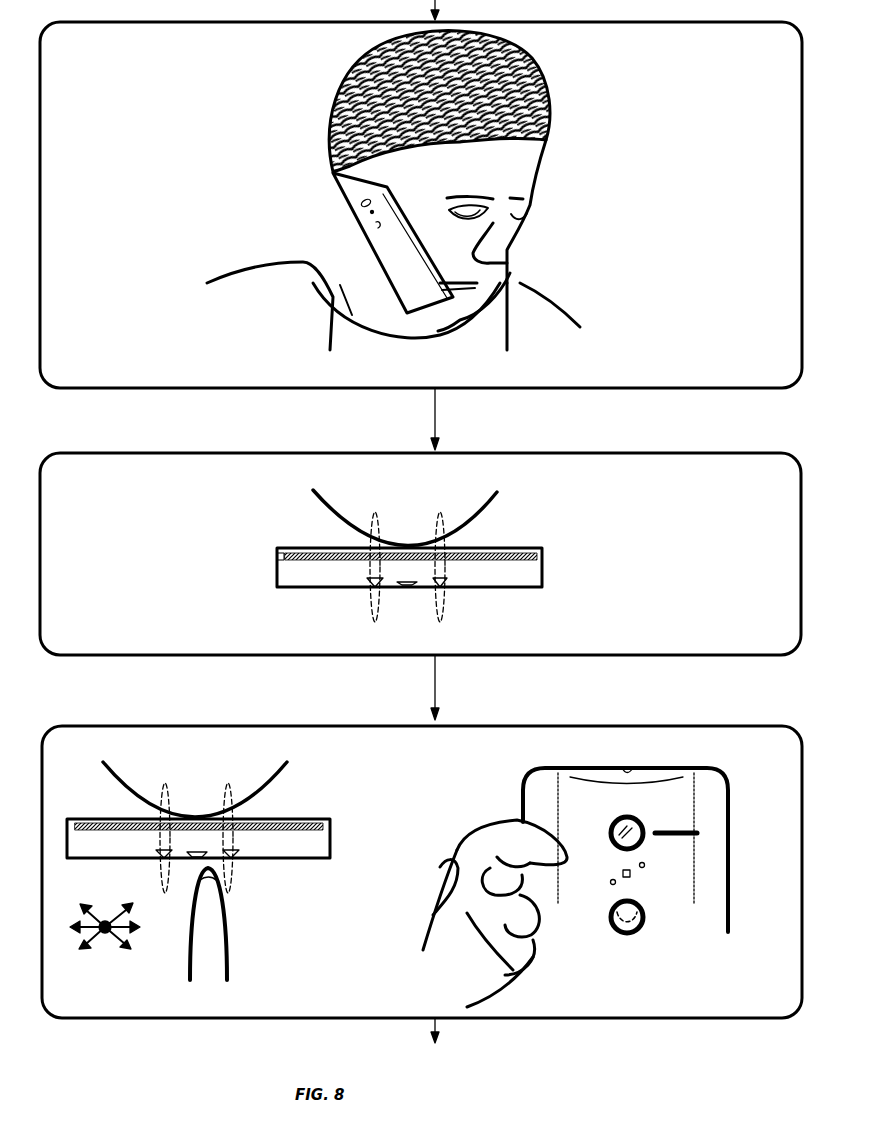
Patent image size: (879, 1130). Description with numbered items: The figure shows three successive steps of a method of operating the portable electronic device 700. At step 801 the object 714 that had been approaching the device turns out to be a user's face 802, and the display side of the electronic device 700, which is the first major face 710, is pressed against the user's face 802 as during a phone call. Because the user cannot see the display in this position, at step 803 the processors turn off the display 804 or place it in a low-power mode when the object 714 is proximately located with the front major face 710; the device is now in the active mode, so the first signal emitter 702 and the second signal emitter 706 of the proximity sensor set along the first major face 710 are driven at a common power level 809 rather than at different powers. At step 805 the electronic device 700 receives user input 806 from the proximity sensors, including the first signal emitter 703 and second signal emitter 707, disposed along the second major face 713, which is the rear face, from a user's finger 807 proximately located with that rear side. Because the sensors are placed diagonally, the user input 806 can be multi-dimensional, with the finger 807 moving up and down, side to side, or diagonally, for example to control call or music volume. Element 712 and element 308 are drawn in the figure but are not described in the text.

The electronic device 700 is at (325, 209).
The step 801 is at (800, 157).
The user's face 802 is at (525, 225).
The step 803 is at (800, 528).
The object 714 is at (318, 500).
The common power level 809 is at (440, 515).
The first major face 710 is at (503, 547).
The display 804 is at (280, 560).
The second signal emitter 706 is at (375, 582).
The first signal emitter 702 is at (440, 582).
The step 805 is at (800, 775).
The first signal emitter 703 is at (163, 856).
The second signal emitter 707 is at (232, 858).
The second major face 713 is at (313, 858).
The input element 712 is at (202, 882).
The user's finger 807 is at (228, 937).
The movement directions 308 is at (106, 935).
The user input 806 is at (564, 882).